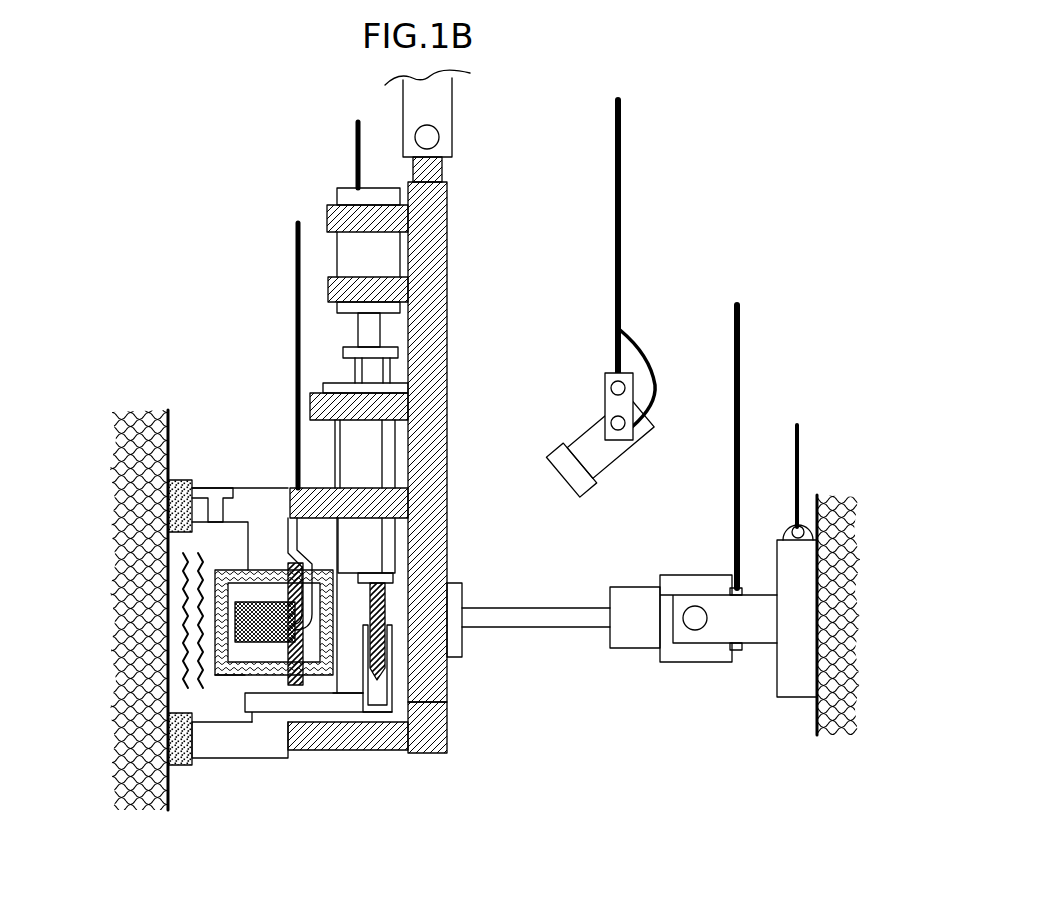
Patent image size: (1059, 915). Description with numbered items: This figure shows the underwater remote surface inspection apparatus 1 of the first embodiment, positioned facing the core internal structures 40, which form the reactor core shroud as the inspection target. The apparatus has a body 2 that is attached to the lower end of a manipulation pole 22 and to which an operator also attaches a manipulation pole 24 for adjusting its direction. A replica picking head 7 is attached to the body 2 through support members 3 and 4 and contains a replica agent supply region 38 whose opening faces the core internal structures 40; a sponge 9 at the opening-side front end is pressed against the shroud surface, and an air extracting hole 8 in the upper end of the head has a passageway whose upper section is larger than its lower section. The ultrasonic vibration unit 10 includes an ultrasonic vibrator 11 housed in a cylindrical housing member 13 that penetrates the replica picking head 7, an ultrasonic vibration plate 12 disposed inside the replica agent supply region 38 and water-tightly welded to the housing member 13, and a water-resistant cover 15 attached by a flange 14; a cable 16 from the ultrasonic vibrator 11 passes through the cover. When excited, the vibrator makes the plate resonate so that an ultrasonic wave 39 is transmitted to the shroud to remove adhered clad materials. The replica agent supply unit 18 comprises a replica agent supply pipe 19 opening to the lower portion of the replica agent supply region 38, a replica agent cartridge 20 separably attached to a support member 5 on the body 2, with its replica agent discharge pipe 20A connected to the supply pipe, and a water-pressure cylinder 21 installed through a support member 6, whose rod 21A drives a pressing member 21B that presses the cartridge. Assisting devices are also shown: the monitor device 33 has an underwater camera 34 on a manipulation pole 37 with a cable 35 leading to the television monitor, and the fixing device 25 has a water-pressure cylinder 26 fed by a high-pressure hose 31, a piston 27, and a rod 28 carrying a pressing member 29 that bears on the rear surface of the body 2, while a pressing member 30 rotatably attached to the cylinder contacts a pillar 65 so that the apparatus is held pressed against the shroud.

The underwater remote surface inspection apparatus 1 is at (487, 730).
The body 2 is at (430, 385).
The support member 3 is at (428, 716).
The support member 4 is at (398, 503).
The support member 5 is at (410, 432).
The support member 6 is at (395, 287).
The replica picking head 7 is at (267, 742).
The air extracting hole 8 is at (203, 488).
The sponge 9 is at (168, 490).
The ultrasonic vibration unit 10 is at (237, 630).
The ultrasonic vibrator 11 is at (235, 680).
The ultrasonic vibration plate 12 is at (215, 598).
The housing member 13 is at (243, 568).
The flange 14 is at (376, 556).
The water-resistant cover 15 is at (332, 743).
The cable 16 is at (296, 292).
The replica agent supply unit 18 is at (335, 444).
The replica agent supply pipe 19 is at (377, 700).
The replica agent cartridge 20 is at (393, 578).
The replica agent discharge pipe 20A is at (388, 660).
The water-pressure cylinder 21 is at (382, 250).
The rod 21A is at (378, 335).
The pressing member 21B is at (355, 378).
The high-pressure hose 22 is at (352, 166).
The manipulation pole 24 is at (440, 112).
The fixing device 25 is at (705, 665).
The water-pressure cylinder 26 is at (702, 572).
The piston 27 is at (640, 643).
The rod 28 is at (582, 607).
The pressing member 29 is at (465, 596).
The pressing member 30 is at (797, 697).
The high-pressure hose 31 is at (733, 496).
The monitor device 33 is at (590, 430).
The underwater camera 34 is at (607, 452).
The cable 35 is at (643, 358).
The manipulation pole 37 is at (622, 163).
The replica agent supply region 38 is at (225, 708).
The ultrasonic wave 39 is at (183, 572).
The core internal structures 40 is at (141, 410).
The pillar 65 is at (832, 496).